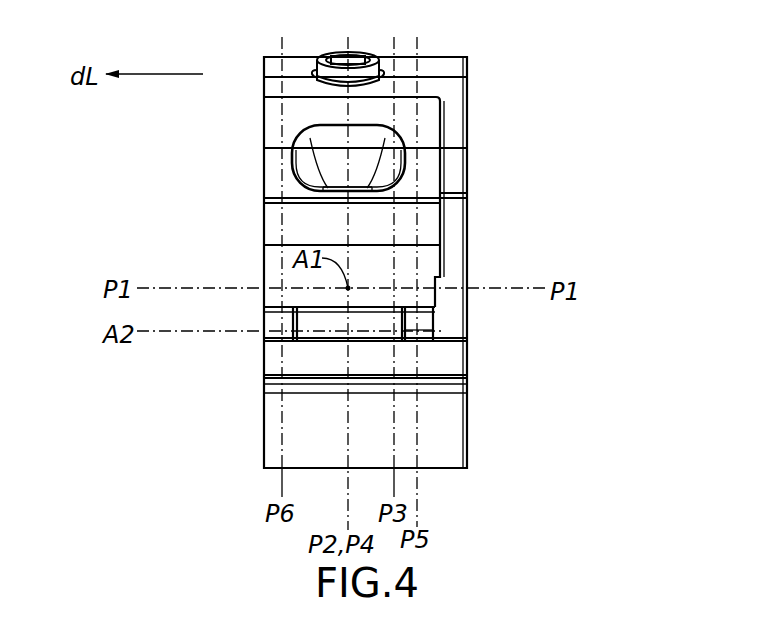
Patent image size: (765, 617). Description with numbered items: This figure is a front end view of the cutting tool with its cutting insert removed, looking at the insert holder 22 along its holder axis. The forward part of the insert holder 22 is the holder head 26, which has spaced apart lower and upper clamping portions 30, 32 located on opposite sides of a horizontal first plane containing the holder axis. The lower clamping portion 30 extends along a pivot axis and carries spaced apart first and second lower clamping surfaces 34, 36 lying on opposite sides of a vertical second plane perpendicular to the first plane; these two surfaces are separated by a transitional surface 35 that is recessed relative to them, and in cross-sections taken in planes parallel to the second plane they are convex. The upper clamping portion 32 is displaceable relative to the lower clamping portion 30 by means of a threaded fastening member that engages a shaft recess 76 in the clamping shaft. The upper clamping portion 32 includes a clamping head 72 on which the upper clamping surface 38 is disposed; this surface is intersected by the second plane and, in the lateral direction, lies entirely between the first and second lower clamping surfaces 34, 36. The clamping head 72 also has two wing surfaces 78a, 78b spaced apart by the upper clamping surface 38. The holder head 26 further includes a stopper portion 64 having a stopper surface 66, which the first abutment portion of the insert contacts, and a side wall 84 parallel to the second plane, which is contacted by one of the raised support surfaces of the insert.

The shaft recess 76 is at (362, 78).
The upper clamping portion 32 is at (340, 151).
The clamping head 72 is at (357, 151).
The upper clamping surface 38 is at (312, 170).
The wing surface 78b is at (313, 173).
The wing surface 78a is at (383, 171).
The stopper portion 64 is at (293, 194).
The stopper surface 66 is at (338, 208).
The insert holder 22 is at (456, 244).
The side wall 84 is at (430, 300).
The first lower clamping surface 34 is at (435, 331).
The second lower clamping surface 36 is at (277, 319).
The transitional surface 35 is at (313, 319).
The lower clamping portion 30 is at (328, 321).
The holder head 26 is at (444, 439).